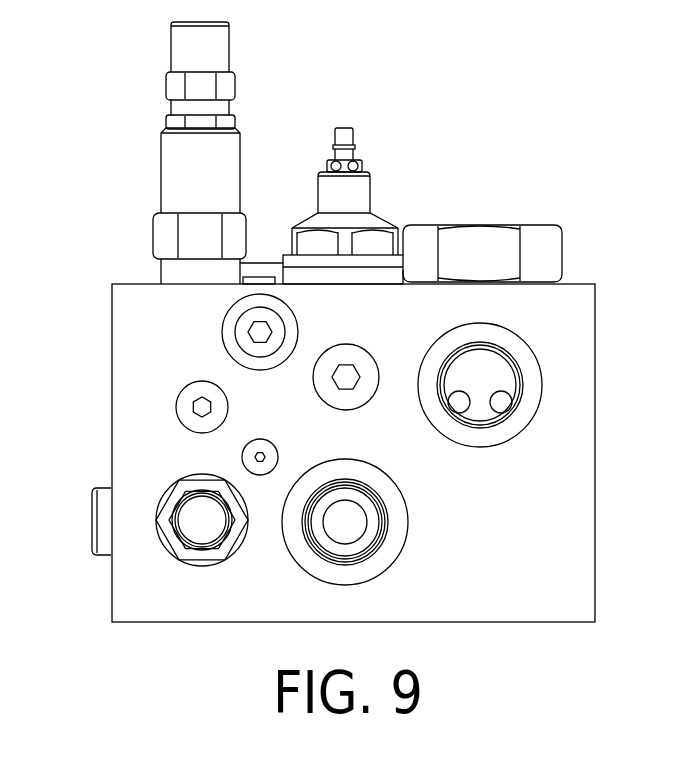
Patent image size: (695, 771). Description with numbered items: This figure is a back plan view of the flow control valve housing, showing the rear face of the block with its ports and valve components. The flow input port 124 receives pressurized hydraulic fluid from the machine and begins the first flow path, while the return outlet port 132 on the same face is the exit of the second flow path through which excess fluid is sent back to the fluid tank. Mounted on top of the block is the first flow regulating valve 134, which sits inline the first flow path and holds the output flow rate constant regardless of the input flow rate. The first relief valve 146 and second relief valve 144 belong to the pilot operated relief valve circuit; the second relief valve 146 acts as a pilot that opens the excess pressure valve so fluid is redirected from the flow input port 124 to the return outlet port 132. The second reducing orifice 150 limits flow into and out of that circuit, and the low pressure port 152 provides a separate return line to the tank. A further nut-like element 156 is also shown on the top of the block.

The flow input port 124 is at (370, 488).
The return outlet port 132 is at (513, 370).
The first flow regulating valve 134 is at (378, 210).
The first relief valve 144 is at (157, 508).
The second relief valve 146 is at (233, 170).
The second reducing orifice 150 is at (197, 407).
The low pressure port 152 is at (235, 313).
The nut 156 is at (490, 230).